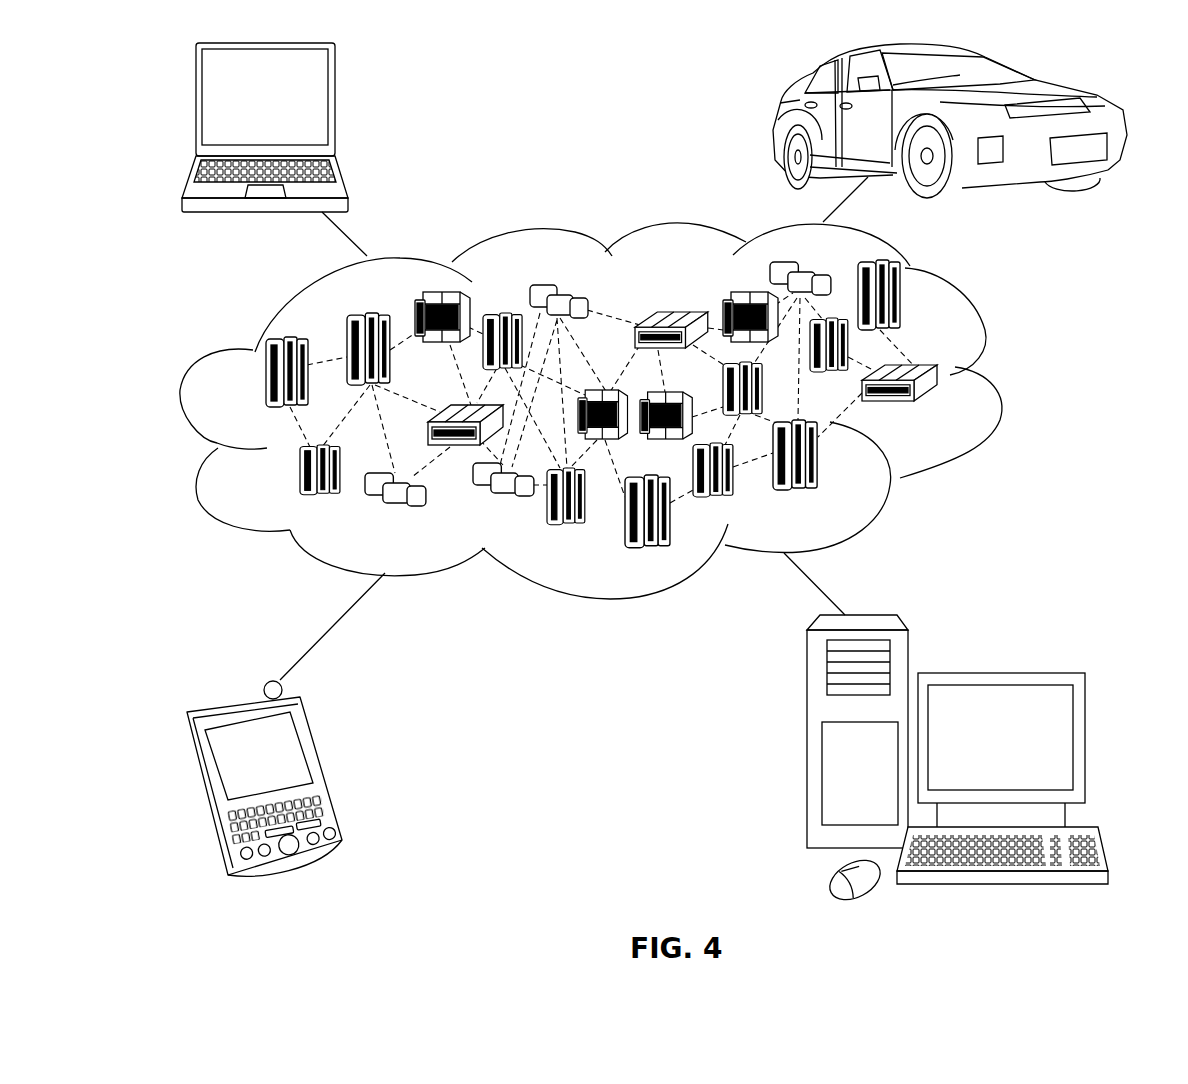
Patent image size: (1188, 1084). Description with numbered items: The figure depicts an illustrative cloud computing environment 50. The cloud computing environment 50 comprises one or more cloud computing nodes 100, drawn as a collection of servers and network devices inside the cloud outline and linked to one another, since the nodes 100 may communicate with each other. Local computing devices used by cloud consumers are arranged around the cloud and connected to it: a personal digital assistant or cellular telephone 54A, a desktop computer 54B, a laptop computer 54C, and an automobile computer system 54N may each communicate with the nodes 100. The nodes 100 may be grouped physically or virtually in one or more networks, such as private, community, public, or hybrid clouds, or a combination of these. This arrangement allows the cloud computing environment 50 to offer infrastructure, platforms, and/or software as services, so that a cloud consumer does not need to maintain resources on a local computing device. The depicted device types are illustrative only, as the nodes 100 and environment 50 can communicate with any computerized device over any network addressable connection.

The cloud computing environment 50 is at (619, 411).
The cloud computing node 100 is at (942, 411).
The personal digital assistant or cellular telephone 54A is at (322, 770).
The desktop computer 54B is at (998, 670).
The laptop computer 54C is at (337, 106).
The automobile computer system 54N is at (776, 124).